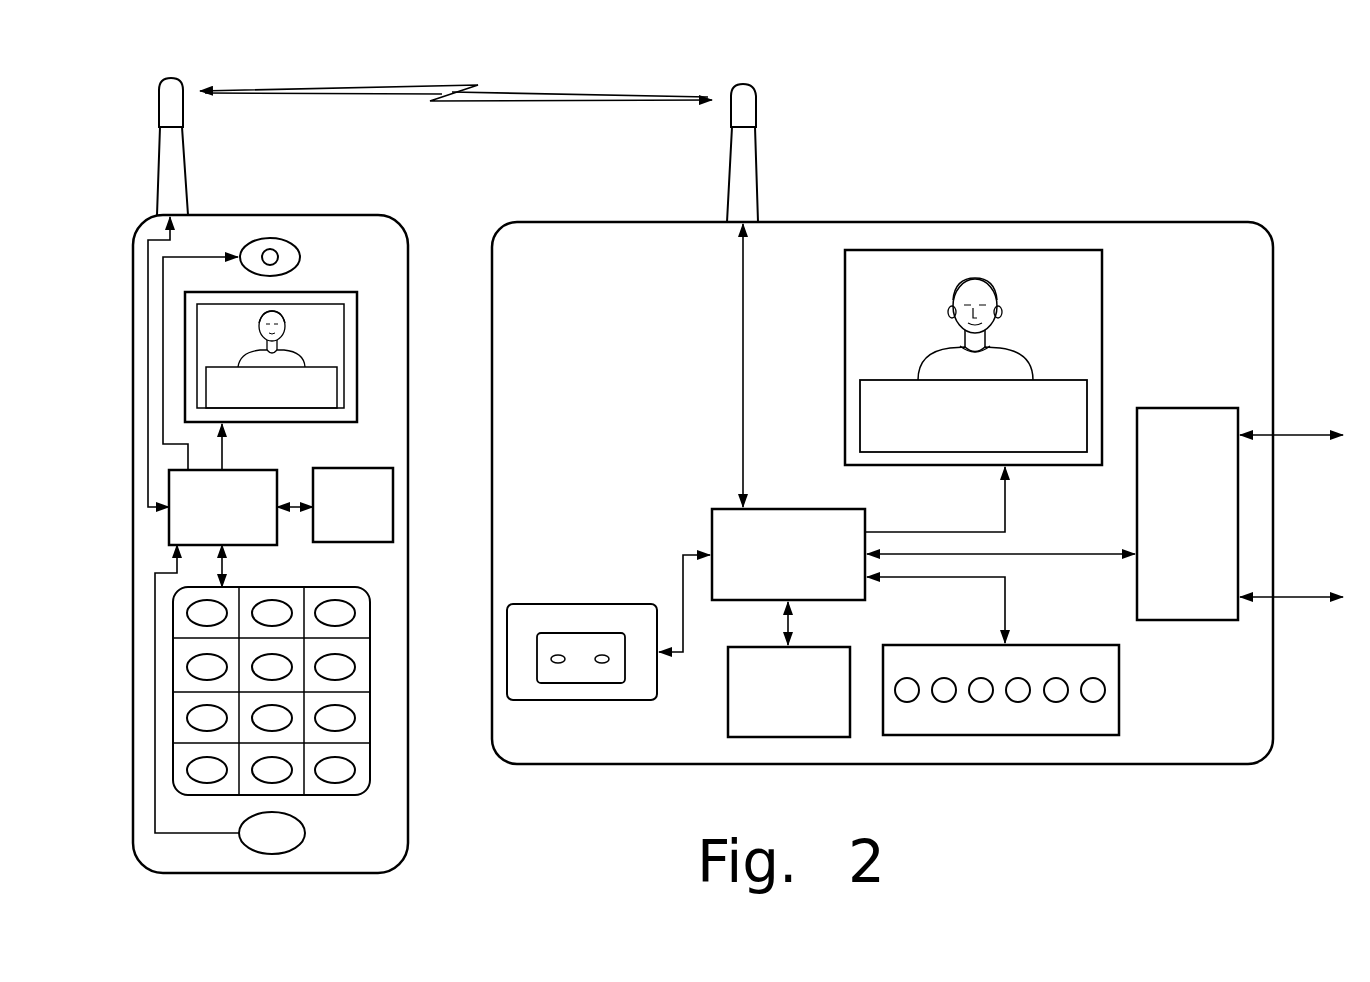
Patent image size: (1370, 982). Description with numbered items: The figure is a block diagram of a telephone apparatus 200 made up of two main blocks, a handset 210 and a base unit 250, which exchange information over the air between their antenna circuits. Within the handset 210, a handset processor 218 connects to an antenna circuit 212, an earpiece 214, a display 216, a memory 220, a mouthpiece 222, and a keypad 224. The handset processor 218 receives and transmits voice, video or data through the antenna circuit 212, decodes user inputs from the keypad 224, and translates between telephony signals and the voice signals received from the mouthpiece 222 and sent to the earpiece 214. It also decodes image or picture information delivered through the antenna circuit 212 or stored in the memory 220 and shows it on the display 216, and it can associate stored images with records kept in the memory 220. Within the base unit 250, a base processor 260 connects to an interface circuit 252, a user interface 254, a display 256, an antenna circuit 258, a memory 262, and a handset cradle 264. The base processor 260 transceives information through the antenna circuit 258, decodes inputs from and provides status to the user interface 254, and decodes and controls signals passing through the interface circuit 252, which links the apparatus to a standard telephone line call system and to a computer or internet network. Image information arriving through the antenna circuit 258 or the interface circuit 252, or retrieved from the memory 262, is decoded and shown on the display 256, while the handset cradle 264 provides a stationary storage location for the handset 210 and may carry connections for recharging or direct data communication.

The telephone apparatus 200 is at (1250, 112).
The handset 210 is at (306, 214).
The antenna circuit 212 is at (185, 173).
The earpiece 214 is at (300, 257).
The display 216 is at (358, 330).
The handset processor 218 is at (248, 469).
The memory 220 is at (393, 480).
The mouthpiece 222 is at (305, 833).
The keypad 224 is at (372, 658).
The base unit 250 is at (983, 222).
The interface circuit 252 is at (1190, 407).
The user interface 254 is at (1058, 645).
The display 256 is at (1103, 288).
The antenna circuit 258 is at (757, 177).
The base processor 260 is at (712, 520).
The memory 262 is at (728, 710).
The handset cradle 264 is at (560, 604).